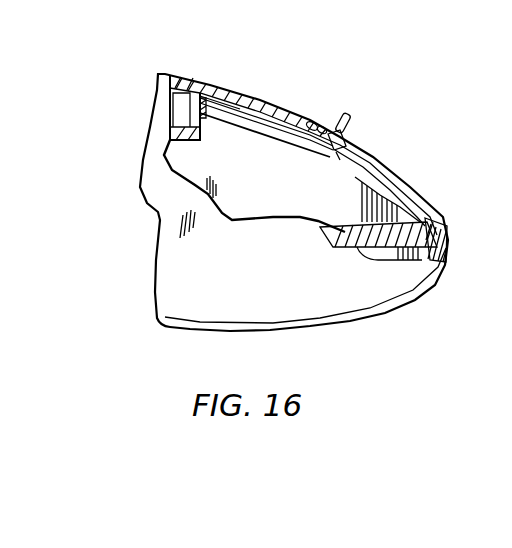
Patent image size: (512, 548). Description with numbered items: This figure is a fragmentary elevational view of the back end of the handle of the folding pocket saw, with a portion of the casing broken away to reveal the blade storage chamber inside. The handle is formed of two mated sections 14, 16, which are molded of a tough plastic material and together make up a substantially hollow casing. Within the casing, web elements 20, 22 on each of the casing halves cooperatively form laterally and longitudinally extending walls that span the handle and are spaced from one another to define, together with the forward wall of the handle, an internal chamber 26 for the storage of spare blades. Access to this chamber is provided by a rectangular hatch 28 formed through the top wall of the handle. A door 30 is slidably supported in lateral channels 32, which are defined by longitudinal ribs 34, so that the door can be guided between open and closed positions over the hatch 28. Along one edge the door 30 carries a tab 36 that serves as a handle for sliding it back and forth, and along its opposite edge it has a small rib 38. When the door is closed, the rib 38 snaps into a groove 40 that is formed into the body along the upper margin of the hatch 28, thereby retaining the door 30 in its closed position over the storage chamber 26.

The handle section 14 is at (449, 234).
The handle section 16 is at (275, 309).
The web element 20 is at (347, 233).
The web element 22 is at (168, 157).
The internal chamber 26 is at (460, 157).
The rectangular hatch 28 is at (330, 148).
The door 30 is at (285, 128).
The lateral channel 32 is at (243, 112).
The longitudinal rib 34 is at (218, 115).
The tab 36 is at (346, 124).
The small rib 38 is at (217, 100).
The groove 40 is at (307, 123).